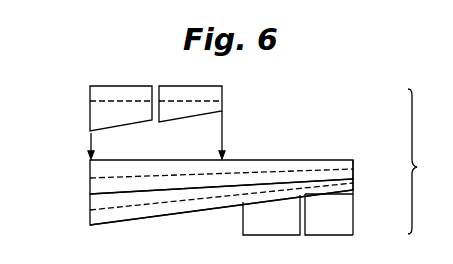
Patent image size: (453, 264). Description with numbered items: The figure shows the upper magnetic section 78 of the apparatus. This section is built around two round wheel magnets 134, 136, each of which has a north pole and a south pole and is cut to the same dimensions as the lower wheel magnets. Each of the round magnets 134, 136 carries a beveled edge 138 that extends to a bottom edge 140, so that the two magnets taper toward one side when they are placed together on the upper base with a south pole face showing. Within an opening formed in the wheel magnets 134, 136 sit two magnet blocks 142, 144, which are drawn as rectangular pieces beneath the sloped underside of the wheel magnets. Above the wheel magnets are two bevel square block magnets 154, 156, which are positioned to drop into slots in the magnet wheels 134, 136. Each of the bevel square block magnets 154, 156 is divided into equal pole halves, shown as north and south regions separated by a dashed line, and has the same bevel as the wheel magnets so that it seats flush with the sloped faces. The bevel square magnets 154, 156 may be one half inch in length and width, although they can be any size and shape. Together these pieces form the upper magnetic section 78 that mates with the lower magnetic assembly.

The magnetic coupling assembly 78 is at (82, 55).
The round magnet 134 is at (90, 174).
The round magnet 136 is at (90, 204).
The beveled edge 138 is at (195, 212).
The bottom edge 140 is at (353, 173).
The magnet block 142 is at (329, 214).
The magnet block 144 is at (271, 215).
The bevel square block magnet 154 is at (118, 86).
The bevel square block magnet 156 is at (197, 86).